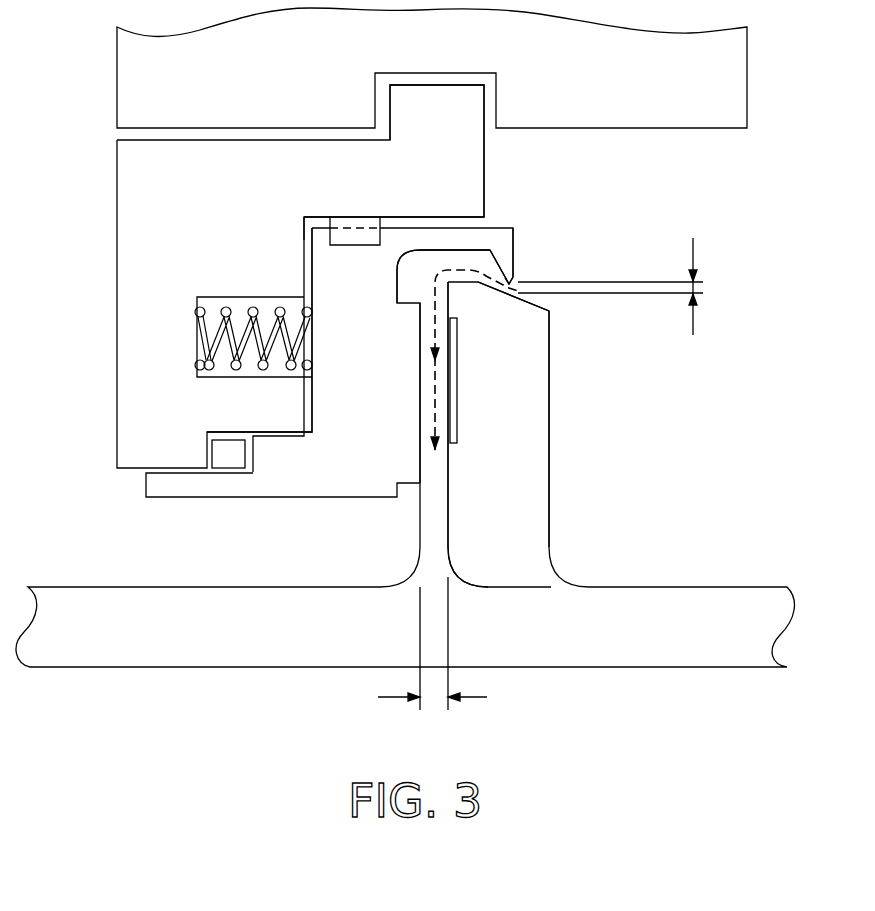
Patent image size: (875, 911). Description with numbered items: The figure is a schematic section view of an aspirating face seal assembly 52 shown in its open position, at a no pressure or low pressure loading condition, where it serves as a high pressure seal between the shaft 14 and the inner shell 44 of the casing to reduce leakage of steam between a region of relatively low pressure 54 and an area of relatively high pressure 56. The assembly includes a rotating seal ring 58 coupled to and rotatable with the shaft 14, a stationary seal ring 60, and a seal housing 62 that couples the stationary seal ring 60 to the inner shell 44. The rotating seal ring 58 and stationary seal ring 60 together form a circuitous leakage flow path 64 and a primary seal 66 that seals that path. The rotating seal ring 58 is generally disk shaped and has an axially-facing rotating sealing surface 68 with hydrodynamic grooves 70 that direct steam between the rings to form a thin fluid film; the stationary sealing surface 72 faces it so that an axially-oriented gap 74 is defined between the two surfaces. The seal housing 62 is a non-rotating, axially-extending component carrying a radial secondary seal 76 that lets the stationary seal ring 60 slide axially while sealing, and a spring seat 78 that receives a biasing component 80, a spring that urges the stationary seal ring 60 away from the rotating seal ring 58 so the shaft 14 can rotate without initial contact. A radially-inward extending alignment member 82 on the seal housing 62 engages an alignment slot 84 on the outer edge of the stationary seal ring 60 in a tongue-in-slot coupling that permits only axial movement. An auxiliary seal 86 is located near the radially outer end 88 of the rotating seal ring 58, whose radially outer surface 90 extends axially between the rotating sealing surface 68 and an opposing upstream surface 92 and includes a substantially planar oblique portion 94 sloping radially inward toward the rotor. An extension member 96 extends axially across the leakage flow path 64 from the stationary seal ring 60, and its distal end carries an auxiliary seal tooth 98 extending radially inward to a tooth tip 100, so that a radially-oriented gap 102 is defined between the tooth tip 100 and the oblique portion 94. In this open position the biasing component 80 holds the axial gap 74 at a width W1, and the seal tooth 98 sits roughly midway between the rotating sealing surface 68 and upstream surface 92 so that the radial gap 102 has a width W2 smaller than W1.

The shaft 14 is at (700, 603).
The inner shell 44 is at (636, 86).
The aspirating face seal assembly 52 is at (756, 185).
The region of relatively low pressure 54 is at (331, 532).
The area of relatively high pressure 56 is at (710, 180).
The rotating seal ring 58 is at (527, 512).
The stationary seal ring 60 is at (378, 397).
The seal housing 62 is at (140, 338).
The leakage flow path 64 is at (432, 318).
The primary seal 66 is at (428, 487).
The rotating sealing surface 68 is at (443, 508).
The grooves 70 is at (458, 405).
The stationary sealing surface 72 is at (421, 378).
The axially-oriented gap 74 is at (440, 472).
The radial secondary seal 76 is at (228, 453).
The spring seat 78 is at (240, 300).
The biasing component 80 is at (197, 297).
The alignment member 82 is at (302, 220).
The alignment slot 84 is at (355, 240).
The auxiliary seal 86 is at (530, 215).
The radially outer end 88 is at (568, 311).
The radially outer surface 90 is at (478, 272).
The upstream surface 92 is at (552, 445).
The oblique portion 94 is at (518, 300).
The extension member 96 is at (430, 240).
The auxiliary seal tooth 98 is at (513, 247).
The tooth tip 100 is at (516, 275).
The radially-oriented gap 102 is at (517, 295).
The width of axial gap W1 is at (487, 697).
The width of radial gap W2 is at (693, 240).